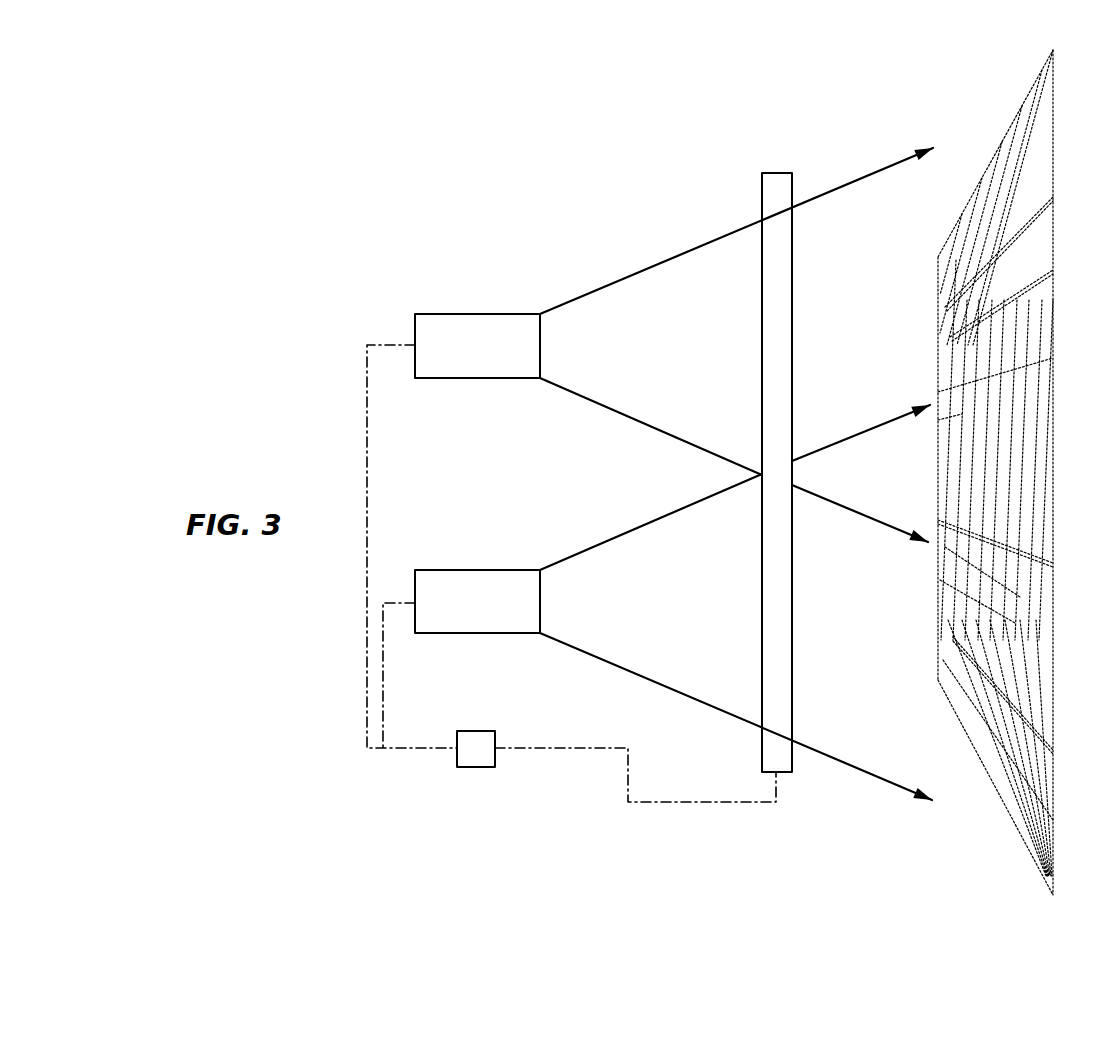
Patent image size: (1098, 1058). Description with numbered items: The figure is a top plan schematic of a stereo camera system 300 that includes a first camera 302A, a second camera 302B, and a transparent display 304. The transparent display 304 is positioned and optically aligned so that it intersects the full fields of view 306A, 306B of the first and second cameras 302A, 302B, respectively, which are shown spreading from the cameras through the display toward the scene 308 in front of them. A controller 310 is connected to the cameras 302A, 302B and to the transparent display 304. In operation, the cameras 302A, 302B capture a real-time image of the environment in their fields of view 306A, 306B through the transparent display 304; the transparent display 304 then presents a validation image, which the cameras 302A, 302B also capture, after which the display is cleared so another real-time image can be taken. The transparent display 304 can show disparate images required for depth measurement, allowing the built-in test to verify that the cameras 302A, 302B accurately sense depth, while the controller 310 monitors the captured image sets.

The camera system 300 is at (487, 243).
The first camera 302A is at (477, 346).
The second camera 302B is at (477, 601).
The transparent display 304 is at (762, 372).
The field of view of the first camera 306A is at (646, 271).
The field of view of the second camera 306B is at (648, 521).
The scene 308 is at (903, 306).
The controller 310 is at (480, 731).